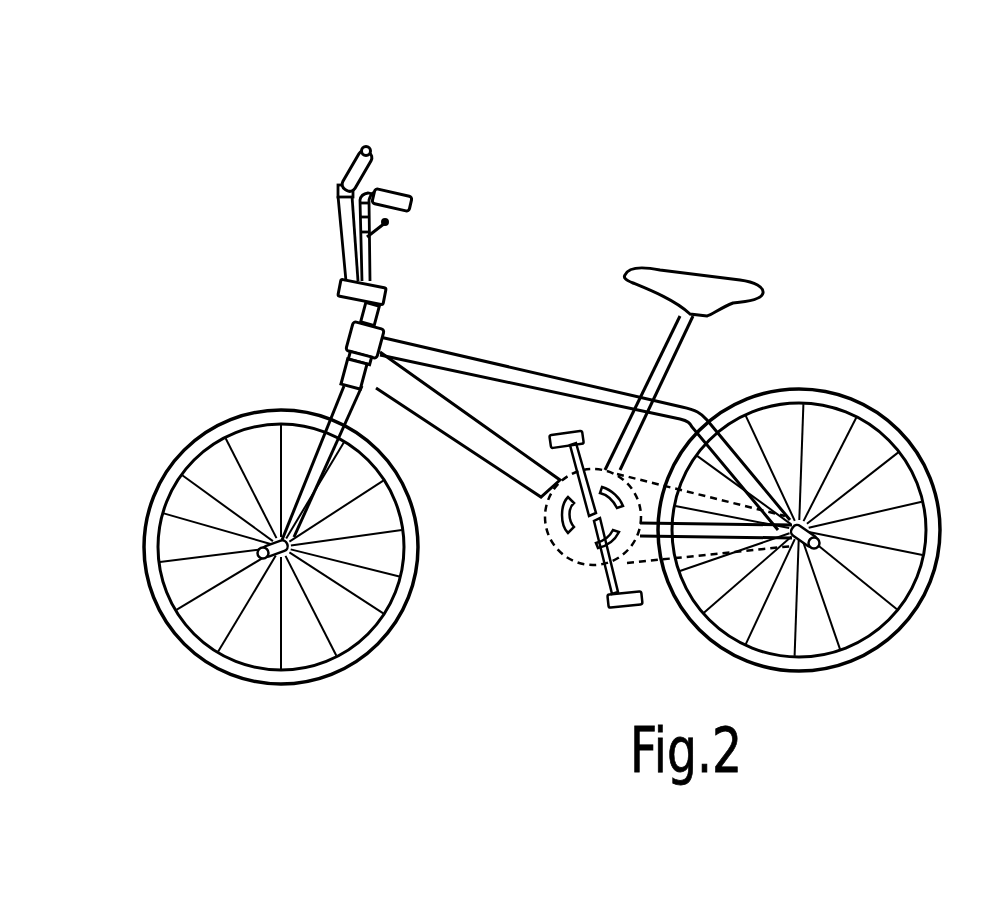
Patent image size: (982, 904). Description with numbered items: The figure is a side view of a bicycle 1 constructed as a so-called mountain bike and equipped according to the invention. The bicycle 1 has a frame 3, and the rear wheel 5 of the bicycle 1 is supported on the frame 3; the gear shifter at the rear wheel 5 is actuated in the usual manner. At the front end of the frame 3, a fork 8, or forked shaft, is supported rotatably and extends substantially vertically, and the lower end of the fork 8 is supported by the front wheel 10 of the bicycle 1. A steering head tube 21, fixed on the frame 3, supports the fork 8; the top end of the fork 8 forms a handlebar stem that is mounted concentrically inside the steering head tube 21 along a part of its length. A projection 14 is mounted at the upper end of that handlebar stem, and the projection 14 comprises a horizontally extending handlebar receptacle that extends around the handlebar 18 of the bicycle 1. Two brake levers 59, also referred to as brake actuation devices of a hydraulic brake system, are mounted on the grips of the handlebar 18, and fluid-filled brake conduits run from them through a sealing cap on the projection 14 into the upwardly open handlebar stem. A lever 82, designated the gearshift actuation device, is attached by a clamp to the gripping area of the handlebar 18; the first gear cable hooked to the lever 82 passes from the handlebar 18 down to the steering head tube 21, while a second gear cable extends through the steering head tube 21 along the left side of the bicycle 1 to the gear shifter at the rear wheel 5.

The bicycle 1 is at (607, 187).
The frame 3 is at (390, 380).
The rear wheel 5 is at (793, 395).
The fork 8 is at (320, 420).
The front wheel 10 is at (183, 460).
The projection 14 is at (340, 293).
The handlebar 18 is at (340, 230).
The steering head tube 21 is at (343, 370).
The brake lever 59 is at (372, 174).
The lever 82 is at (368, 190).